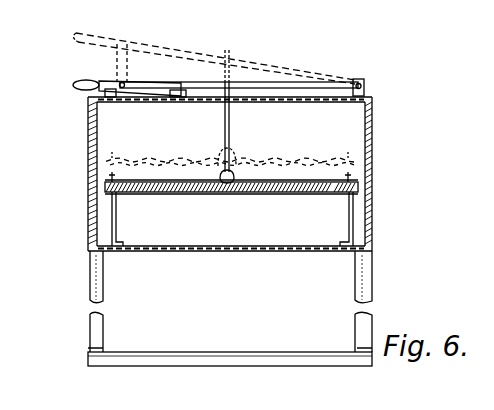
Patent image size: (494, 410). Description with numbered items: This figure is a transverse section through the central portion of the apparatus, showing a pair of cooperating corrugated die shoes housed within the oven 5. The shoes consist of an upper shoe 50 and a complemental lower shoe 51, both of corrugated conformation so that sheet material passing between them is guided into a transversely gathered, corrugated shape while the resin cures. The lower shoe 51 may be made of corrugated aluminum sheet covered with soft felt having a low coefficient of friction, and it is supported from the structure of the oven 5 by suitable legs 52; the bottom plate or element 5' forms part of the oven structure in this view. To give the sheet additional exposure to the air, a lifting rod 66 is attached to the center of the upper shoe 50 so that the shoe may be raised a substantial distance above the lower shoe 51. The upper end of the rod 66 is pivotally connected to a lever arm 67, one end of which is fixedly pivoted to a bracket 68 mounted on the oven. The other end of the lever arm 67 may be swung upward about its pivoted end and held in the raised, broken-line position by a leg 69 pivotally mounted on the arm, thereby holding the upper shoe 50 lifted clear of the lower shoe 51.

The oven 5 is at (209, 231).
The container bottom plate 5' is at (231, 207).
The upper shoe 50 is at (186, 160).
The lower shoe 51 is at (228, 196).
The legs 52 is at (116, 236).
The lifting rod 66 is at (231, 131).
The lever arm 67 is at (277, 80).
The bracket 68 is at (364, 88).
The leg 69 is at (160, 84).